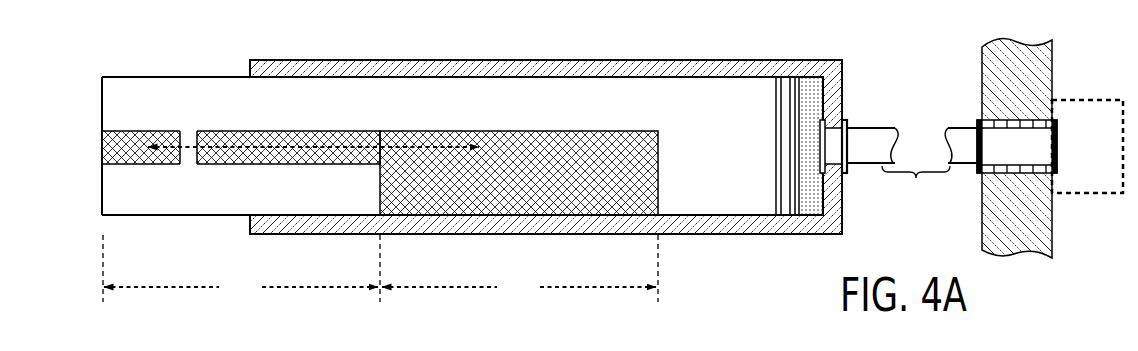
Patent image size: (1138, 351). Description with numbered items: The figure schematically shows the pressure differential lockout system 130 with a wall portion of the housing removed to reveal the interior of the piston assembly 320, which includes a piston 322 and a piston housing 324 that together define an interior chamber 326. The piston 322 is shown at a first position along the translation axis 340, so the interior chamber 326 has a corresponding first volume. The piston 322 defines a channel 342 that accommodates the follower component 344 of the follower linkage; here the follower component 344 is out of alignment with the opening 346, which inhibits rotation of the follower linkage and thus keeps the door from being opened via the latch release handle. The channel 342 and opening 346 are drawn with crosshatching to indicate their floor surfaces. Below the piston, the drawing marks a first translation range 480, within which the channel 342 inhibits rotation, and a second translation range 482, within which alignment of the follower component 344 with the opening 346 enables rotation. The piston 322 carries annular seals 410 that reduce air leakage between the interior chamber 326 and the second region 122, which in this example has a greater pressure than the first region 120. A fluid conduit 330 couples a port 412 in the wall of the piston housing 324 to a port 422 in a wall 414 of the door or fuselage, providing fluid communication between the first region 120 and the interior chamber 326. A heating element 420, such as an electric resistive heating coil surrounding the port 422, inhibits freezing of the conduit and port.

The first region 120 is at (1103, 158).
The second region 122 is at (457, 156).
The pressure differential lockout system 130 is at (562, 156).
The piston assembly 320 is at (858, 98).
The piston 322 is at (215, 203).
The piston housing 324 is at (320, 62).
The interior chamber 326 is at (808, 91).
The fluid conduit 330 is at (912, 165).
The translation axis 340 is at (417, 140).
The channel 342 is at (122, 147).
The follower component 344 is at (184, 165).
The opening 346 is at (520, 194).
The annular seals 410 is at (792, 216).
The port 412 is at (832, 157).
The wall 414 is at (1032, 90).
The heating element 420 is at (992, 123).
The port 422 is at (1000, 168).
The first translation range 480 is at (241, 268).
The second translation range 482 is at (520, 268).